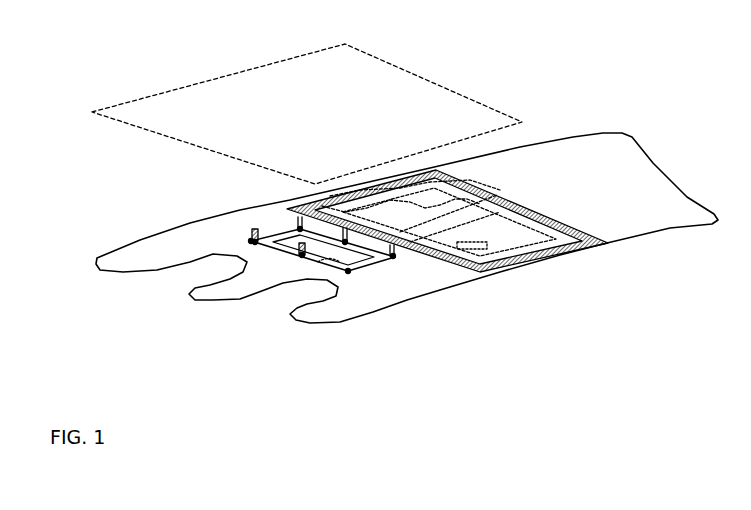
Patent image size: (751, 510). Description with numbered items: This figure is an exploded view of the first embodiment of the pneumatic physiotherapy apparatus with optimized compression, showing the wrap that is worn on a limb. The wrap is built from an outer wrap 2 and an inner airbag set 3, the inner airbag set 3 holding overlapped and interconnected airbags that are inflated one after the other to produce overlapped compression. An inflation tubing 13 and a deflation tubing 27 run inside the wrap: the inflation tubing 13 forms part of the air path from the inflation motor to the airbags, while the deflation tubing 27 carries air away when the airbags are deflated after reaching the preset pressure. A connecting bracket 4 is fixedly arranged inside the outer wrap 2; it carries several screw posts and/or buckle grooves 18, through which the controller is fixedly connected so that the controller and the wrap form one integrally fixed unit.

The outer wrap 2 is at (443, 112).
The inner airbag set 3 is at (528, 264).
The deflation tubing 27 is at (335, 200).
The inflation tubing 13 is at (400, 252).
The screw posts and/or buckle grooves 18 is at (291, 252).
The connecting bracket 4 is at (335, 262).